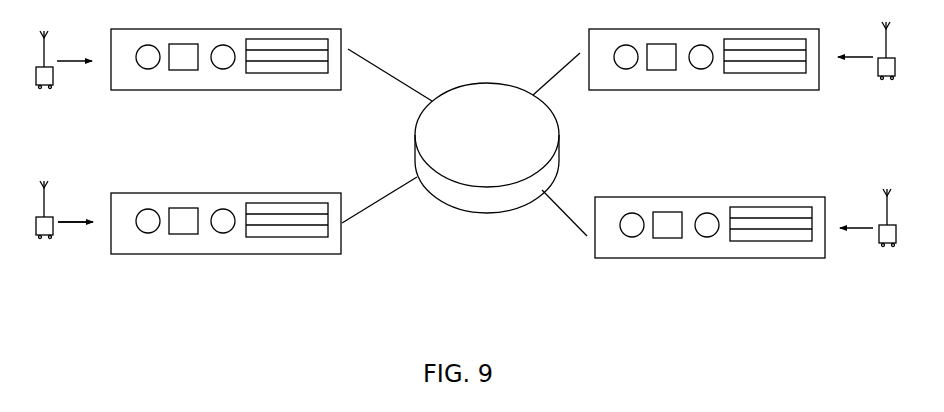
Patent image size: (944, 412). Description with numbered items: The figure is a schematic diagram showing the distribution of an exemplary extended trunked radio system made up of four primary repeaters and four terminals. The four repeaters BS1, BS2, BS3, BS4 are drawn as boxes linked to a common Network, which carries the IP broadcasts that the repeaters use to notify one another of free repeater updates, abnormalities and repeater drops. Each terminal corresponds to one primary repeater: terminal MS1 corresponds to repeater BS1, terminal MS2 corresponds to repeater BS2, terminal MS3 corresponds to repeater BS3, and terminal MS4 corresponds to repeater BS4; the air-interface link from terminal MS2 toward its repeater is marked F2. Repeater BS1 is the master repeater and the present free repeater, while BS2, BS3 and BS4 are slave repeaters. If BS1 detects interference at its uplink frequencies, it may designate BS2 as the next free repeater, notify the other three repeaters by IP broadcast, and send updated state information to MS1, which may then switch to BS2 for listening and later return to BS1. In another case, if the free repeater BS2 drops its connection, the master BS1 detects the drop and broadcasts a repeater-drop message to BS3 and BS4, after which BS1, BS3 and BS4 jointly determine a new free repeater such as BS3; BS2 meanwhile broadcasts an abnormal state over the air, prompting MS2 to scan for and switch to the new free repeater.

The primary repeater BS1 is at (226, 49).
The primary repeater BS2 is at (226, 212).
The primary repeater BS3 is at (704, 48).
The primary repeater BS4 is at (710, 218).
The terminal MS1 is at (58, 74).
The terminal MS2 is at (59, 227).
The terminal MS3 is at (870, 66).
The terminal MS4 is at (872, 232).
The frequency F2 signal from MS2 to BS2 F2 is at (78, 214).
The network Network is at (487, 148).